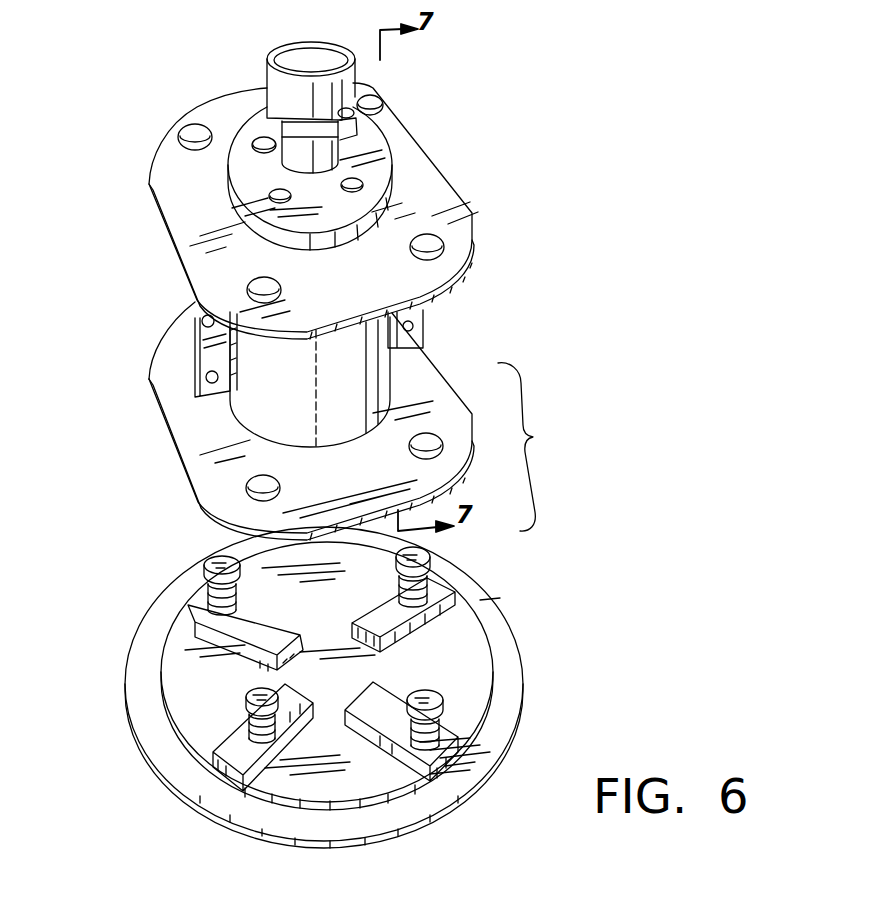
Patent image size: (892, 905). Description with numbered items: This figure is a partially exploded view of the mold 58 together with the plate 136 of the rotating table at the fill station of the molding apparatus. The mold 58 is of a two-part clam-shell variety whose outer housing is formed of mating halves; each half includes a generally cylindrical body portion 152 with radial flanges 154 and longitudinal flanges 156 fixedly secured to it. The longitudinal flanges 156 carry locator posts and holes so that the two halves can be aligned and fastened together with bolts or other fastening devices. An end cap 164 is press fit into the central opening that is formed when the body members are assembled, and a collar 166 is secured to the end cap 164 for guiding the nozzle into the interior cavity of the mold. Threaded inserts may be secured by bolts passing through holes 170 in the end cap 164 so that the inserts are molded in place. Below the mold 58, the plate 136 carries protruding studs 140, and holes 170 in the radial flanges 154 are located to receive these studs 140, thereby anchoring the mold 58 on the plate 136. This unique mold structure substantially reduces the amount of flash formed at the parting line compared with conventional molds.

The mold 58 is at (485, 232).
The plate 136 is at (525, 688).
The studs 140 is at (433, 693).
The cylindrical body portion 152 is at (258, 358).
The radial flanges 154 is at (163, 138).
The longitudinal flanges 156 is at (197, 356).
The end cap 164 is at (377, 178).
The collar 166 is at (303, 160).
The holes 170 is at (253, 140).